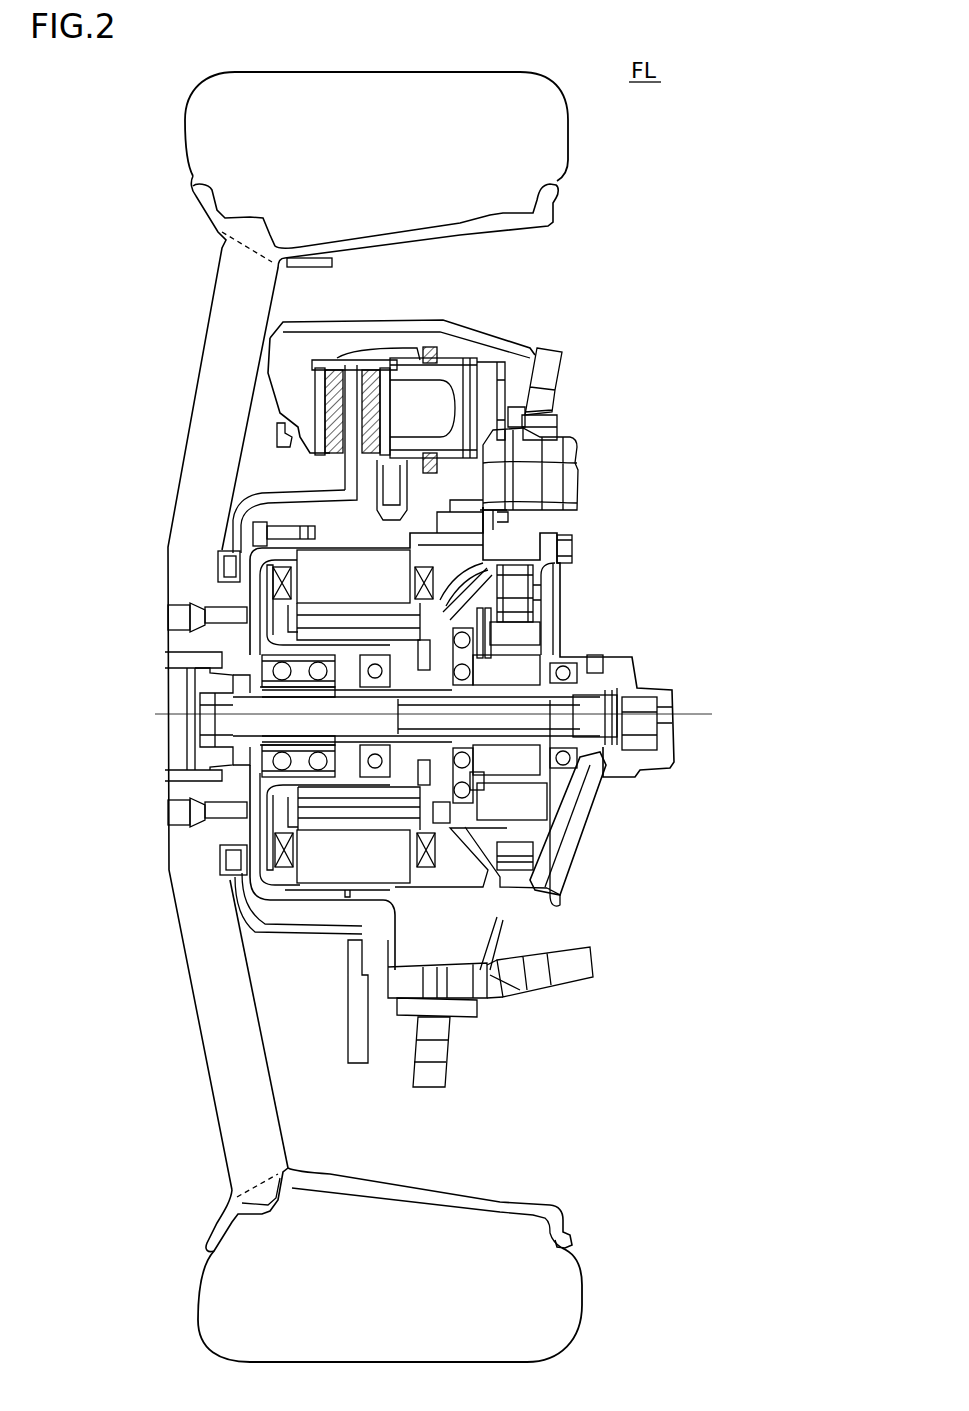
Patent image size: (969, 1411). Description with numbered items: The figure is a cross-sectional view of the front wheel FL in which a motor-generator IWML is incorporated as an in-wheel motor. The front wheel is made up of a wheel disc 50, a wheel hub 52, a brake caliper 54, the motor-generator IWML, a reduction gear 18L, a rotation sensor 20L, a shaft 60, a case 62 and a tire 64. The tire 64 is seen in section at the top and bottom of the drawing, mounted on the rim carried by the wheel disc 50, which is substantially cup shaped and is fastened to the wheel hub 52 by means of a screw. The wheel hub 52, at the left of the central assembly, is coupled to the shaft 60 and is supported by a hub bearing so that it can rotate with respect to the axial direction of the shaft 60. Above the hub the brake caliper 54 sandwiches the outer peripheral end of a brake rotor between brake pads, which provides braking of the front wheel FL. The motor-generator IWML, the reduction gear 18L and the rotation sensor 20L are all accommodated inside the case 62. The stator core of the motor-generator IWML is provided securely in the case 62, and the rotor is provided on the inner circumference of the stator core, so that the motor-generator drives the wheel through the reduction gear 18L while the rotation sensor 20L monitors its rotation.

The tire 64 is at (213, 130).
The wheel disc 50 is at (227, 342).
The brake caliper 54 is at (367, 320).
The case 62 is at (260, 593).
The wheel hub 52 is at (233, 655).
The rotation sensor 20L is at (563, 540).
The reduction gear 18L is at (528, 596).
The shaft 60 is at (568, 745).
The motor-generator IWML is at (313, 908).